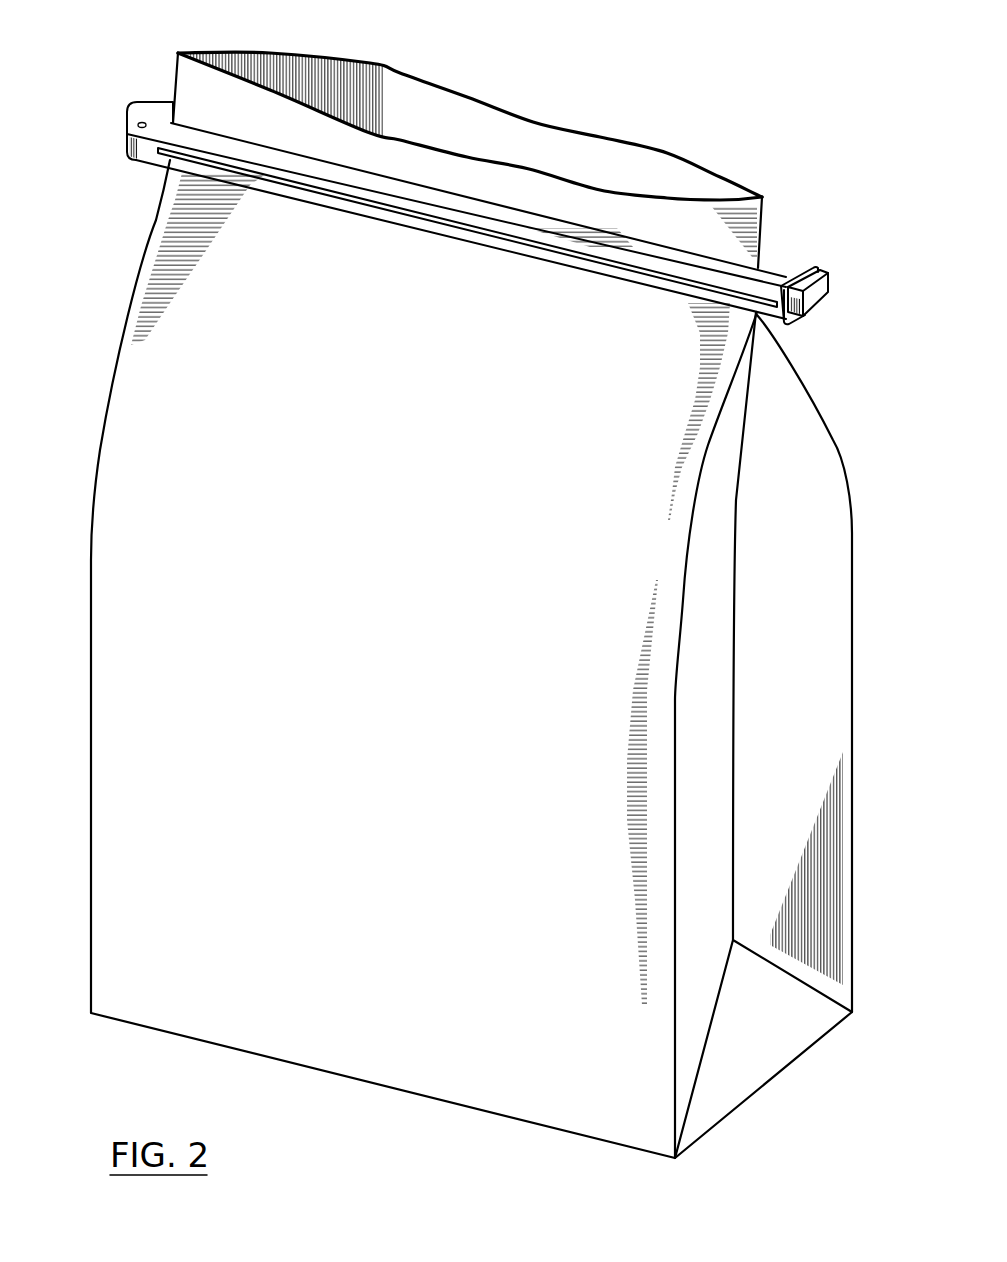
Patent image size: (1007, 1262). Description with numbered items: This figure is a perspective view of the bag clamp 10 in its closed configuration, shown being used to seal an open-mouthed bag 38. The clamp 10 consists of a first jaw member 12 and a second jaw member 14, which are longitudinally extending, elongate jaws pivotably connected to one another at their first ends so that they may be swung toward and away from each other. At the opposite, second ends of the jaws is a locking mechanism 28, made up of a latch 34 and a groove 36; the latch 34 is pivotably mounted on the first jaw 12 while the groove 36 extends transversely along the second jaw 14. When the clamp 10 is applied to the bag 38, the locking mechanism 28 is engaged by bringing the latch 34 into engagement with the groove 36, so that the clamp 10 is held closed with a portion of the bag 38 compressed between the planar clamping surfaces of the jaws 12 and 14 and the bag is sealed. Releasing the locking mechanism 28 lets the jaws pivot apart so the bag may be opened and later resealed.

The bag clamp 10 is at (118, 78).
The first jaw member 12 is at (793, 258).
The second jaw member 14 is at (708, 266).
The locking mechanism 28 is at (838, 253).
The latch 34 is at (830, 288).
The groove 36 is at (791, 314).
The open-mouthed bag 38 is at (90, 617).